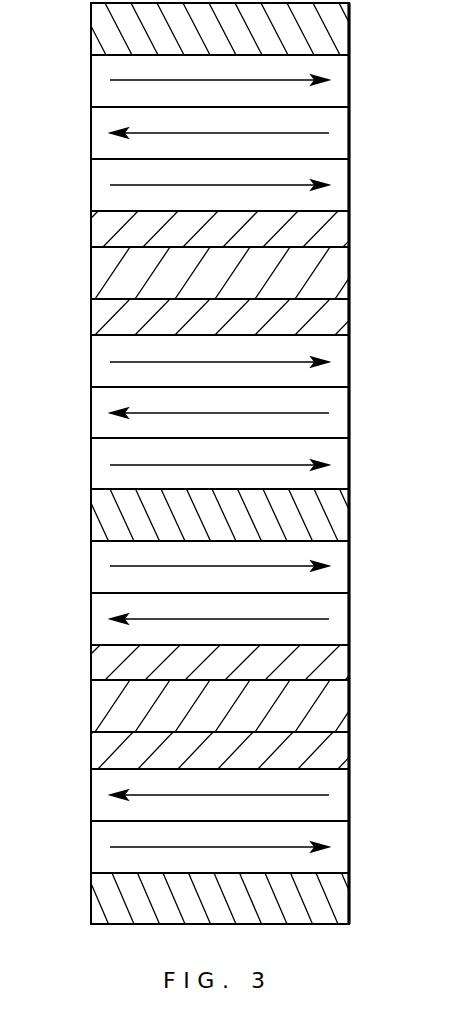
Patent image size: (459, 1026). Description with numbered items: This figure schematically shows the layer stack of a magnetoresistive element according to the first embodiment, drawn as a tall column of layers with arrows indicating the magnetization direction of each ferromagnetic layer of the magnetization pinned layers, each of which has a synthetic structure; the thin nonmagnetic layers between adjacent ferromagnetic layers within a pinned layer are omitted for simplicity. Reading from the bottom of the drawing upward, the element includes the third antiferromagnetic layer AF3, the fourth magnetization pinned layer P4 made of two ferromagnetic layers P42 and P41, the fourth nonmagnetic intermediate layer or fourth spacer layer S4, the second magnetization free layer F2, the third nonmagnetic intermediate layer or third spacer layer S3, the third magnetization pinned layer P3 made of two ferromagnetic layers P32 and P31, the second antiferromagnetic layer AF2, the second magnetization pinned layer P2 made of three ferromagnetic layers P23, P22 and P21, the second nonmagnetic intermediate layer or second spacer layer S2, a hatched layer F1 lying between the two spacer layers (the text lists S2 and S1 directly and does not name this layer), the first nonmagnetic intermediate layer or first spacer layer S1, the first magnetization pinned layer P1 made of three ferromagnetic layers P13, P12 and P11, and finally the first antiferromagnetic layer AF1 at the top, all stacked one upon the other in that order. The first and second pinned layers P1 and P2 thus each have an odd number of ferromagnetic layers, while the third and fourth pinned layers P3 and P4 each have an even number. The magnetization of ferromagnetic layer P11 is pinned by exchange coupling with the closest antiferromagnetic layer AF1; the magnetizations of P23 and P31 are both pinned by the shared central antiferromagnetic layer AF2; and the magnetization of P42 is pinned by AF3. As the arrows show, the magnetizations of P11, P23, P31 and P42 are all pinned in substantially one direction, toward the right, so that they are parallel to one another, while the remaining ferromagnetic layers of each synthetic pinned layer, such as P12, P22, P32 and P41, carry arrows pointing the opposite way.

The first antiferromagnetic layer AF1 is at (343, 31).
The ferromagnetic layer P11 is at (91, 79).
The ferromagnetic layer P12 is at (91, 132).
The ferromagnetic layer P13 is at (91, 184).
The first magnetization pinned layer P1 is at (224, 133).
The first nonmagnetic intermediate layer S1 is at (345, 234).
The first free layer F1 is at (348, 278).
The second nonmagnetic intermediate layer S2 is at (345, 320).
The ferromagnetic layer P21 is at (91, 361).
The ferromagnetic layer P22 is at (91, 412).
The ferromagnetic layer P23 is at (91, 464).
The second magnetization pinned layer P2 is at (224, 412).
The second antiferromagnetic layer AF2 is at (343, 519).
The ferromagnetic layer P31 is at (91, 565).
The ferromagnetic layer P32 is at (91, 618).
The third magnetization pinned layer P3 is at (224, 593).
The third nonmagnetic intermediate layer S3 is at (345, 666).
The second magnetization free layer F2 is at (348, 709).
The fourth nonmagnetic intermediate layer S4 is at (345, 754).
The ferromagnetic layer P41 is at (91, 794).
The ferromagnetic layer P42 is at (91, 846).
The fourth magnetization pinned layer P4 is at (224, 821).
The third antiferromagnetic layer AF3 is at (343, 902).